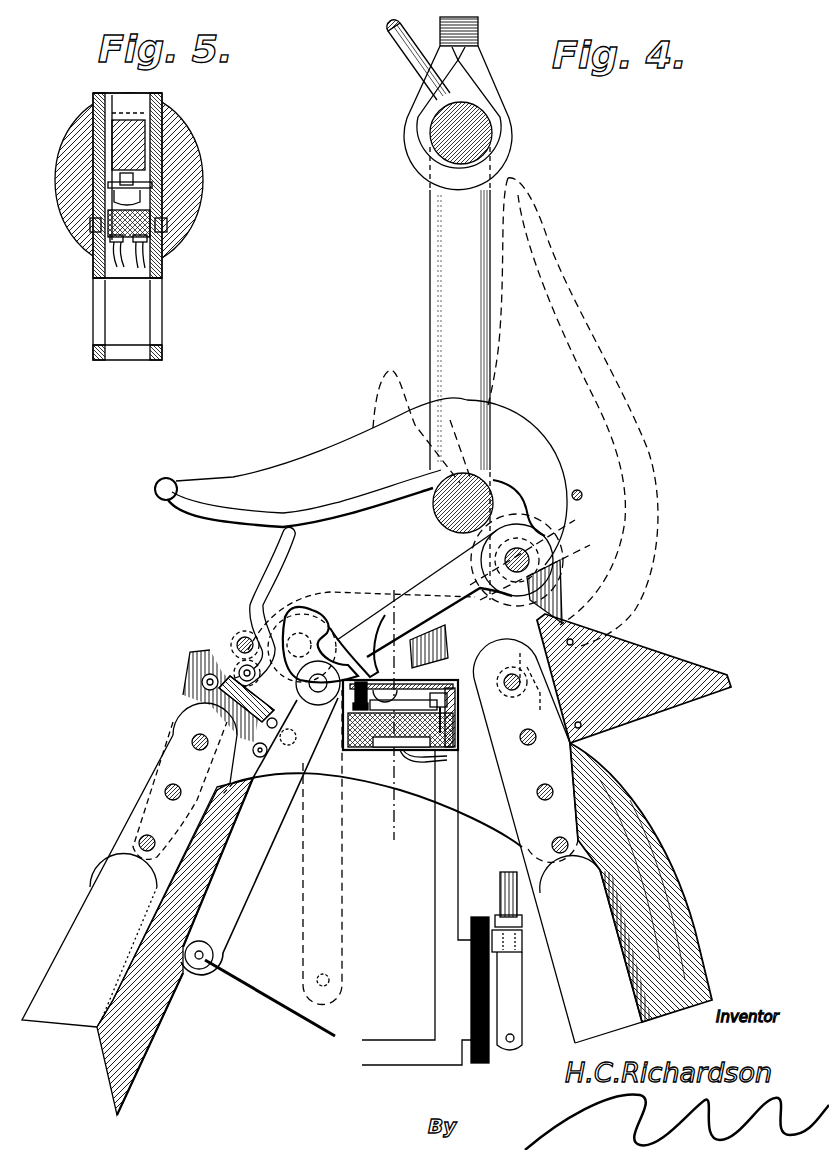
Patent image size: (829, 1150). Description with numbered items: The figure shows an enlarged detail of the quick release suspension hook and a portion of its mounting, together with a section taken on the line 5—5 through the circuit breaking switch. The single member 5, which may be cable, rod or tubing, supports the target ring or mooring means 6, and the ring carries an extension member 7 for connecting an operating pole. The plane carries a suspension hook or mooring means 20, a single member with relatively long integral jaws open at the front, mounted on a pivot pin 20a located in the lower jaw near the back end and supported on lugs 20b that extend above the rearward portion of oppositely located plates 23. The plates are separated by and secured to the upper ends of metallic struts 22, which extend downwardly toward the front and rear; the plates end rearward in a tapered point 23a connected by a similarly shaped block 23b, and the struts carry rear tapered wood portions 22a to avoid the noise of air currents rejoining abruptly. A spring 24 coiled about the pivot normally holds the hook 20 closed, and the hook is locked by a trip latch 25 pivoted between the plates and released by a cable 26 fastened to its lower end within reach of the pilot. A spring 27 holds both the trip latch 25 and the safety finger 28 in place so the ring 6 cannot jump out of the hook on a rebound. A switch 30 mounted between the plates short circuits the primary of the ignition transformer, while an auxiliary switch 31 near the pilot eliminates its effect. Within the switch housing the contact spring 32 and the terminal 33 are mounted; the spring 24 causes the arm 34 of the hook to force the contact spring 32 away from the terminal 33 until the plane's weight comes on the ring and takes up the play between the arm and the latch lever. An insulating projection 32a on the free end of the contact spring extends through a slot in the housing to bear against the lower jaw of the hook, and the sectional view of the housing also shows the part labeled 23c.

In FIG. 4, the single member 5 is at (394, 713).
In FIG. 4, the target ring or mooring means 6 is at (443, 236).
In FIG. 4, the extension member 7 is at (405, 50).
In FIG. 4, the suspension hook or mooring means 20 is at (300, 462).
In FIG. 4, the pivot pin 20a is at (532, 560).
In FIG. 4, the lugs 20b is at (557, 607).
In FIG. 5, the struts 22 is at (127, 319).
In FIG. 4, the struts 22 is at (332, 873).
In FIG. 4, the rear tapered wood portions 22a is at (138, 1058).
In FIG. 5, the plates 23 is at (103, 122).
In FIG. 4, the plates 23 is at (520, 647).
In FIG. 4, the tapered point 23a is at (727, 680).
In FIG. 4, the block 23b is at (677, 670).
In FIG. 5, the jaw boss 23c is at (72, 138).
In FIG. 4, the spring 24 is at (582, 496).
In FIG. 4, the trip latch 25 is at (313, 620).
In FIG. 4, the cable 26 is at (283, 1010).
In FIG. 4, the spring 27 is at (197, 702).
In FIG. 4, the safety finger 28 is at (250, 578).
In FIG. 4, the switch 30 is at (458, 735).
In FIG. 4, the auxiliary switch 31 is at (513, 1002).
In FIG. 5, the contact spring 32 is at (108, 205).
In FIG. 4, the contact spring 32 is at (420, 700).
In FIG. 4, the insulating projection 32a is at (389, 646).
In FIG. 5, the terminal 33 is at (150, 192).
In FIG. 4, the terminal 33 is at (373, 684).
In FIG. 4, the arm 34 is at (438, 577).